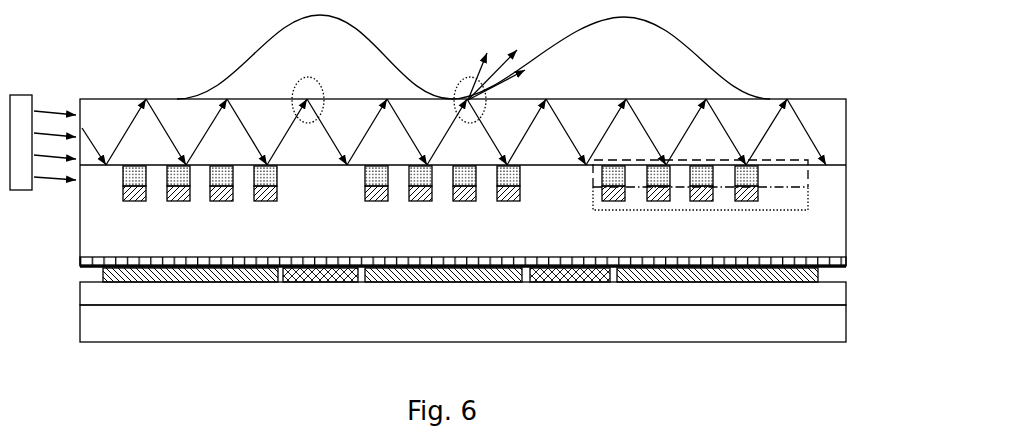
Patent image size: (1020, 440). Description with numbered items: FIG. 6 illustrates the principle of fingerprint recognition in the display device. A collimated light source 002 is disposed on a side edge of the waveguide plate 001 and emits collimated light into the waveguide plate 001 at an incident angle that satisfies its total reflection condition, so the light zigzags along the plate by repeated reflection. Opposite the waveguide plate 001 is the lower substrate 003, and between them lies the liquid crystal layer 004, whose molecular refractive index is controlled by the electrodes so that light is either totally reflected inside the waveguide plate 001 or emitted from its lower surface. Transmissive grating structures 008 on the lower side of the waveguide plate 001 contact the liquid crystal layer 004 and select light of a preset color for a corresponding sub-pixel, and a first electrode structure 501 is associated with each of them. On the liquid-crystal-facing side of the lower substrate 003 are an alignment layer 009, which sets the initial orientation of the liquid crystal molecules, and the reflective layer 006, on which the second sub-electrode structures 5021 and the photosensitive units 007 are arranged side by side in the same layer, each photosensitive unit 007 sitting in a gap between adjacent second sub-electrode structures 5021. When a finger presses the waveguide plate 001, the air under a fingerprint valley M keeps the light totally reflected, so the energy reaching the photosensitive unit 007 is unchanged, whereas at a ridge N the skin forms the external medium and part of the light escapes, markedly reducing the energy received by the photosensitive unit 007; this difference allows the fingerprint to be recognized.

The waveguide plate 001 is at (846, 124).
The collimated light source 002 is at (22, 95).
The lower substrate 003 is at (846, 323).
The liquid crystal layer 004 is at (80, 215).
The reflective layer 006 is at (846, 292).
The photosensitive unit 007 is at (564, 273).
The transmissive grating structure 008 is at (808, 173).
The alignment layer 009 is at (846, 261).
The first electrode structure 501 is at (808, 197).
The second sub-electrode structure 5021 is at (194, 268).